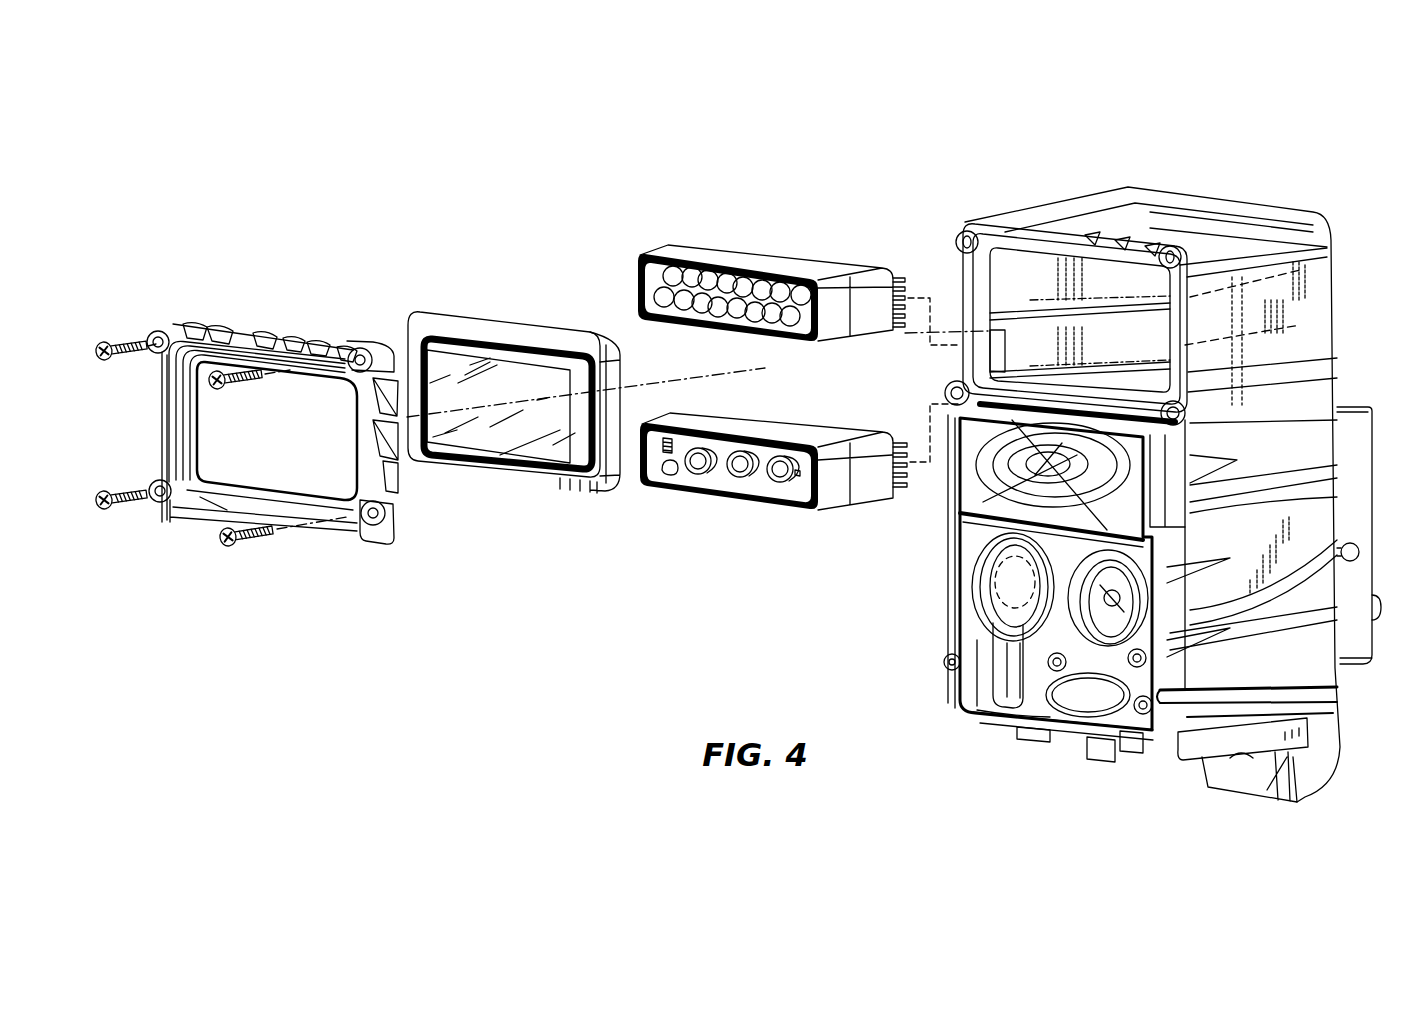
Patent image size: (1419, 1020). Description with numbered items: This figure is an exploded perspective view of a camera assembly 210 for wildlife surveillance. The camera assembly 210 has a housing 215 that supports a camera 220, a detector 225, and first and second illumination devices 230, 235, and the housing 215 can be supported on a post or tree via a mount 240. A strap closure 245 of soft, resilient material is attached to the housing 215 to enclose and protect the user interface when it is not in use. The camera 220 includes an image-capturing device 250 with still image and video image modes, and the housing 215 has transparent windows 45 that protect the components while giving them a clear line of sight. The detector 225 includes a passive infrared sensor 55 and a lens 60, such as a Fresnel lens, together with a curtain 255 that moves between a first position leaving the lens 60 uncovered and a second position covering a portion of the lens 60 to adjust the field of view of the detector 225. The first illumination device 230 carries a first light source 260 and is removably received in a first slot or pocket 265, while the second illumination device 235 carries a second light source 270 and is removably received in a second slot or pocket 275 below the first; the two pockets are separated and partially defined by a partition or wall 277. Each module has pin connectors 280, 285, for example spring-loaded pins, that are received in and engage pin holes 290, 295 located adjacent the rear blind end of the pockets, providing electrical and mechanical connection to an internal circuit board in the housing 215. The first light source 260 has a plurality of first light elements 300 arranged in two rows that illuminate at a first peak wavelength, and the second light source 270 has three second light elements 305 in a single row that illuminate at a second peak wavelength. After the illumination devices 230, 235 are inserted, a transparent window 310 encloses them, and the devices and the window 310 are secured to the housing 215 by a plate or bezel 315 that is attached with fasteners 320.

The camera assembly 210 is at (724, 113).
The housing 215 is at (1123, 194).
The camera 220 is at (1118, 628).
The detector 225 is at (1000, 600).
The first illumination device 230 is at (723, 246).
The second illumination device 235 is at (648, 490).
The mount 240 is at (1372, 425).
The strap closure 245 is at (968, 488).
The image-capturing device 250 is at (1030, 705).
The curtain 255 is at (983, 667).
The first light source 260 is at (656, 292).
The first slot or pocket 265 is at (1000, 270).
The second light source 270 is at (797, 488).
The second slot or pocket 275 is at (1000, 351).
The partition or wall 277 is at (1143, 327).
The pin connector 280 is at (898, 276).
The pin connector 285 is at (900, 442).
The pin holes 290 is at (1305, 265).
The pin holes 295 is at (1305, 322).
The first light elements 300 is at (747, 292).
The second light elements 305 is at (778, 480).
The transparent window 310 is at (513, 443).
The plate or bezel 315 is at (373, 539).
The fasteners 320 is at (252, 541).
The transparent windows 45 is at (1100, 612).
The passive infrared sensor 55 is at (1000, 574).
The lens 60 is at (1008, 618).